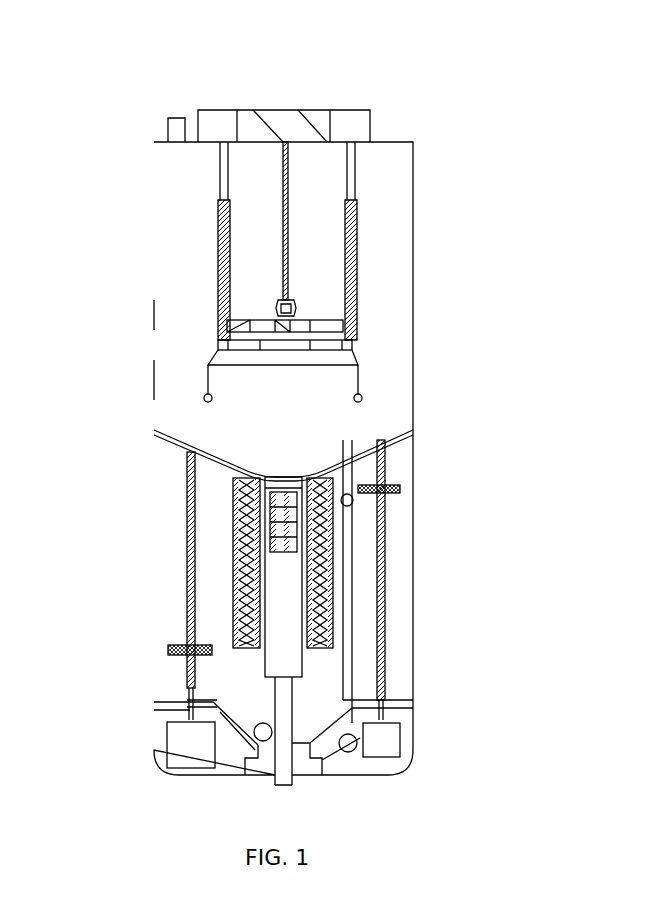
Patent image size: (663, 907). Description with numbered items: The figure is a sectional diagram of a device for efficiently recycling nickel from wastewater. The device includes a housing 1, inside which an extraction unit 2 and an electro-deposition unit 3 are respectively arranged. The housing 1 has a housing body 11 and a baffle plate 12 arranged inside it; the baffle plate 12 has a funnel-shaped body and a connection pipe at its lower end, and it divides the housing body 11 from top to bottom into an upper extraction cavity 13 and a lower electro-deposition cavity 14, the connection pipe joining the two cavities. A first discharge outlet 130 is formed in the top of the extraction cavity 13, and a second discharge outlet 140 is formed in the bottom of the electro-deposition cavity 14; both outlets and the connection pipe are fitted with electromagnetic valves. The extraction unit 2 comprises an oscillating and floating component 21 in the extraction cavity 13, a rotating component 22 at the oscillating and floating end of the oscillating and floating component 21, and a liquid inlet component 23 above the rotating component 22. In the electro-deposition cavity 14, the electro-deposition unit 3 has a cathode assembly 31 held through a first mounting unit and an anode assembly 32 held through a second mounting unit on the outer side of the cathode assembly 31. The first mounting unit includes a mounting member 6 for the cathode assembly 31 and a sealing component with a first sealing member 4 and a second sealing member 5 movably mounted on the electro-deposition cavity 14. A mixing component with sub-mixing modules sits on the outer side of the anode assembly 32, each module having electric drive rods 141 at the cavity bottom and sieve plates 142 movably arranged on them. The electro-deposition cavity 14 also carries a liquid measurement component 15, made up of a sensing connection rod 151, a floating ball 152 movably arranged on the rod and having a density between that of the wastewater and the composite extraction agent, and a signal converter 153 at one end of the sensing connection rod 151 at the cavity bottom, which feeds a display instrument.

The housing 1 is at (153, 318).
The extraction unit 2 is at (413, 318).
The electro-deposition unit 3 is at (155, 615).
The first sealing member 4 is at (245, 768).
The second sealing member 5 is at (255, 728).
The mounting member 6 is at (295, 728).
The housing body 11 is at (413, 160).
The baffle plate 12 is at (375, 445).
The extraction cavity 13 is at (155, 380).
The electro-deposition cavity 14 is at (410, 527).
The liquid measurement component 15 is at (353, 473).
The oscillating and floating component 21 is at (352, 332).
The rotating component 22 is at (265, 322).
The liquid inlet component 23 is at (280, 300).
The cathode assembly 31 is at (297, 670).
The anode assembly 32 is at (333, 612).
The first discharge outlet 130 is at (178, 116).
The second discharge outlet 140 is at (235, 742).
The electric drive rod 141 is at (188, 580).
The sieve plate 142 is at (168, 648).
The sensing connection rod 151 is at (352, 577).
The floating ball 152 is at (383, 484).
The signal converter 153 is at (355, 740).